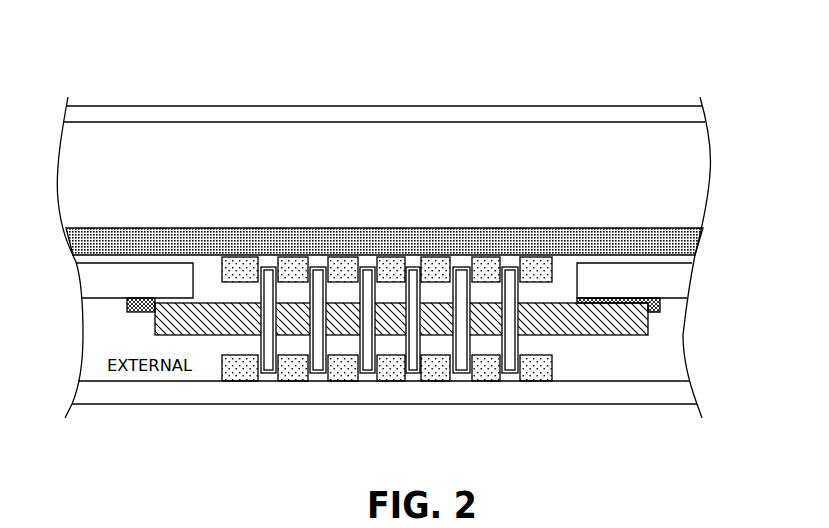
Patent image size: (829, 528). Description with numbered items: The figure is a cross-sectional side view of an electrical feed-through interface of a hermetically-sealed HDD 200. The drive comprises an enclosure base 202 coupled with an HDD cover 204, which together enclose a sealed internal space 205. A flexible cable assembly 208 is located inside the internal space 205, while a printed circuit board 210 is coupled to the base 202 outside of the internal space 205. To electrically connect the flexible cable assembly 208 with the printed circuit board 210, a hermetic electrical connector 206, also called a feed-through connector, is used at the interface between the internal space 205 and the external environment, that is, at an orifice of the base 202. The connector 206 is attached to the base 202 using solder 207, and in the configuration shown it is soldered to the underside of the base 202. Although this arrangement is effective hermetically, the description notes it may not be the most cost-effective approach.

The hermetically-sealed HDD 200 is at (119, 48).
The enclosure base 202 is at (97, 279).
The HDD cover 204 is at (614, 115).
The sealed internal space 205 is at (683, 163).
The hermetic electrical connector 206 is at (660, 314).
The solder 207 is at (126, 300).
The flexible cable assembly 208 is at (155, 235).
The printed circuit board 210 is at (607, 392).